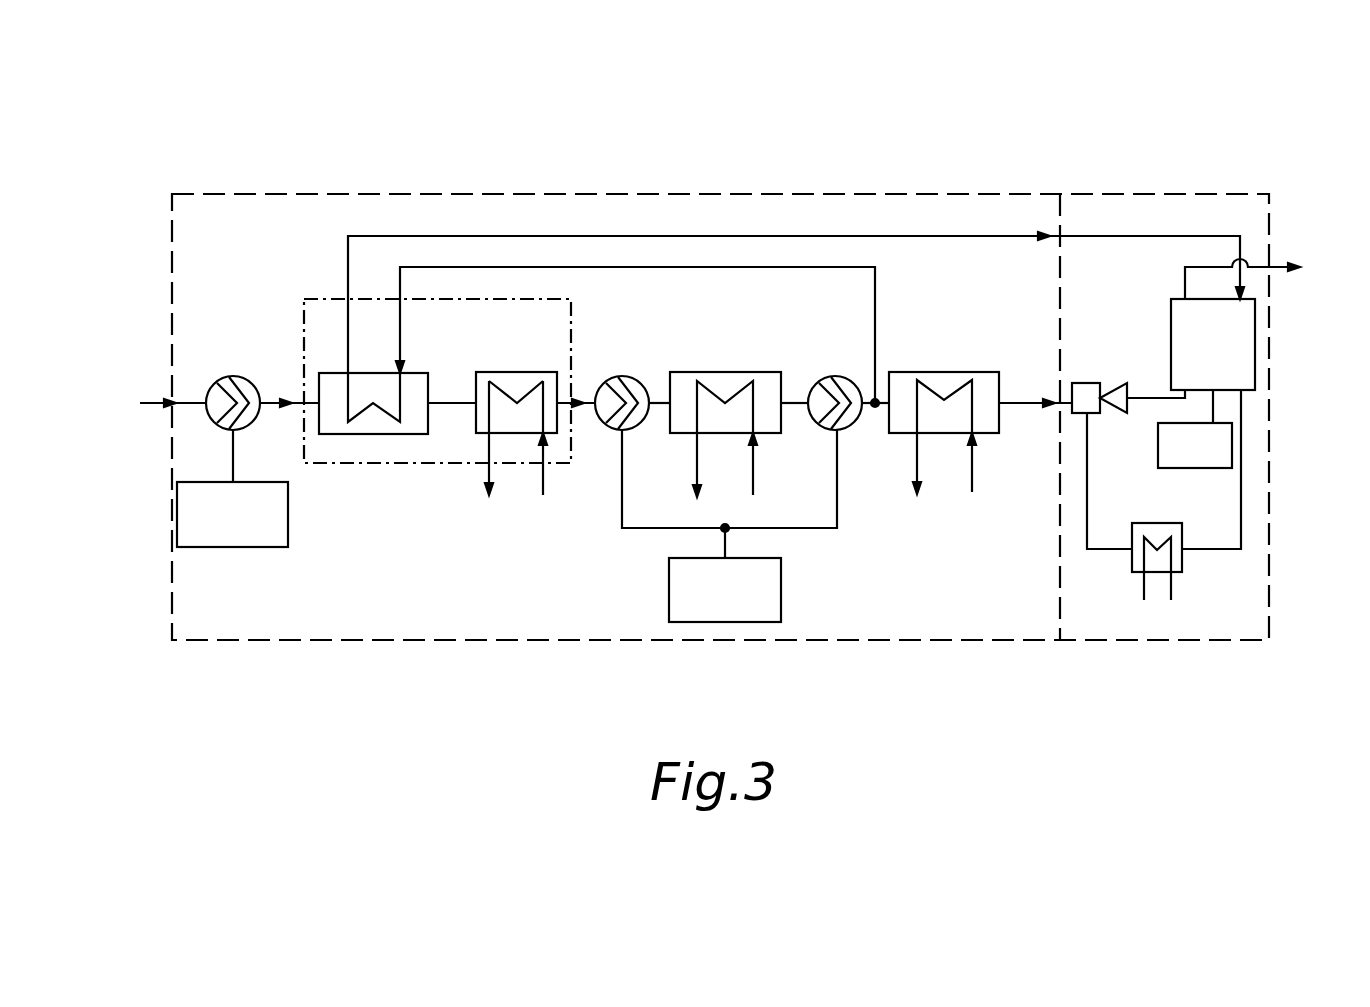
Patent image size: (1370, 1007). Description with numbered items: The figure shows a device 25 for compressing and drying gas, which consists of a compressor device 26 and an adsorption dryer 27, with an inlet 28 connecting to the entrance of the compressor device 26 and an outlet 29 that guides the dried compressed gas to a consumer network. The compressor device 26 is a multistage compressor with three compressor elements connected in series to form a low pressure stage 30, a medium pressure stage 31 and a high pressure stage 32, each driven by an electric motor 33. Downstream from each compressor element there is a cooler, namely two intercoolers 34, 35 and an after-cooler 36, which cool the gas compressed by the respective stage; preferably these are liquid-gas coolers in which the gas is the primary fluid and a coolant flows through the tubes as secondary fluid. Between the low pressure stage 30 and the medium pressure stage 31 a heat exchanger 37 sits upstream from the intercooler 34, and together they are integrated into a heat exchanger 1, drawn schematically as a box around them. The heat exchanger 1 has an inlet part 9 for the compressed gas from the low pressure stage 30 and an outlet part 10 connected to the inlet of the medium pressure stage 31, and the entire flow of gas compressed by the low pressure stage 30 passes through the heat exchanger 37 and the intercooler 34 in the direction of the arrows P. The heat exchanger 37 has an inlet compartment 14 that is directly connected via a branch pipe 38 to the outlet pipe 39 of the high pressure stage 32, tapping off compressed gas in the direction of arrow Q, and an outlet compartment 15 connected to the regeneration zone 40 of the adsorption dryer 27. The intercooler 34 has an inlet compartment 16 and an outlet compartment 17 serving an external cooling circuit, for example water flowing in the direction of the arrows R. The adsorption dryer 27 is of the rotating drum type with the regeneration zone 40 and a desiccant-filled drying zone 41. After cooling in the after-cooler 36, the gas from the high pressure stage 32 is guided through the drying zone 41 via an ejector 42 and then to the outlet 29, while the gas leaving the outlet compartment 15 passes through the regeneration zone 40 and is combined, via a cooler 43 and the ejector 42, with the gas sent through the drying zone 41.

The heat exchanger 1 is at (437, 463).
The inlet part 9 is at (314, 397).
The outlet part 10 is at (570, 463).
The inlet compartment 14 is at (399, 325).
The outlet compartment 15 is at (344, 325).
The inlet compartment 16 is at (539, 459).
The outlet compartment 17 is at (484, 459).
The device 25 is at (1232, 89).
The compressor device 26 is at (597, 120).
The adsorption dryer 27 is at (1163, 108).
The inlet 28 is at (152, 403).
The outlet 29 is at (1263, 276).
The low pressure stage 30 is at (229, 377).
The medium pressure stage 31 is at (633, 377).
The high pressure stage 32 is at (840, 377).
The electric motor 33 is at (243, 518).
The intercooler 34 is at (519, 372).
The intercooler 35 is at (730, 372).
The after-cooler 36 is at (950, 372).
The heat exchanger 37 is at (333, 373).
The branch pipe 38 is at (603, 308).
The outlet pipe 39 is at (858, 426).
The regeneration zone 40 is at (1235, 370).
The drying zone 41 is at (1190, 330).
The ejector 42 is at (1086, 383).
The cooler 43 is at (1182, 557).